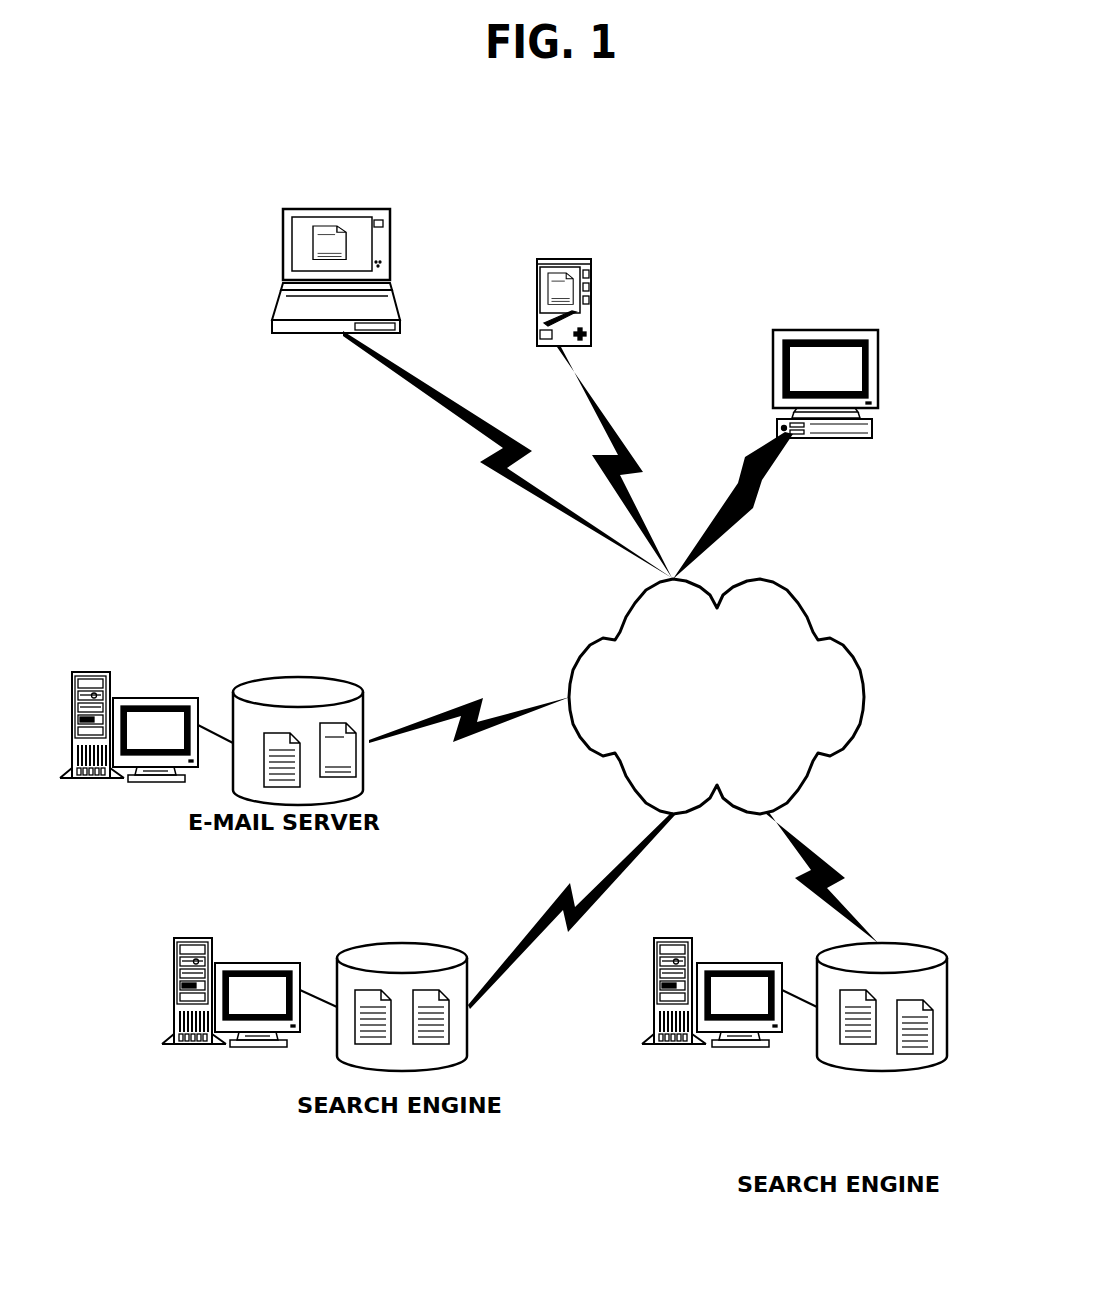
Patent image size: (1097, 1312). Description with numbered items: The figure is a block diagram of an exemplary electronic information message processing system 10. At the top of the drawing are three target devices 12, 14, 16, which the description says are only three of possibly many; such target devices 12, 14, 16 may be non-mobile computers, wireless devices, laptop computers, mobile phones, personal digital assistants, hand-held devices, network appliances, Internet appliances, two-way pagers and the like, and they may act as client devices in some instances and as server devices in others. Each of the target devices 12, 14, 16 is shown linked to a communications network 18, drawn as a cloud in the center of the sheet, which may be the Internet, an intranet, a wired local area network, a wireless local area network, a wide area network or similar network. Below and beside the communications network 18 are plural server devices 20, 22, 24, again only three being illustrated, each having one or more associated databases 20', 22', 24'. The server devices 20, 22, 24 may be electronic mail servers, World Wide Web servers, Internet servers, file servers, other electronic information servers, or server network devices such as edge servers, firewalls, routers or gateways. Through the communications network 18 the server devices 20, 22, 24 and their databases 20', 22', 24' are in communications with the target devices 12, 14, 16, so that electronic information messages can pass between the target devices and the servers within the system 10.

The electronic information message processing system 10 is at (805, 140).
The target device 12 is at (343, 209).
The target device 14 is at (591, 263).
The target device 16 is at (827, 330).
The communications network 18 is at (862, 695).
The server device 20 is at (146, 720).
The database 20' is at (303, 720).
The server device 22 is at (250, 978).
The database 22' is at (406, 985).
The server device 24 is at (729, 977).
The database 24' is at (882, 1052).